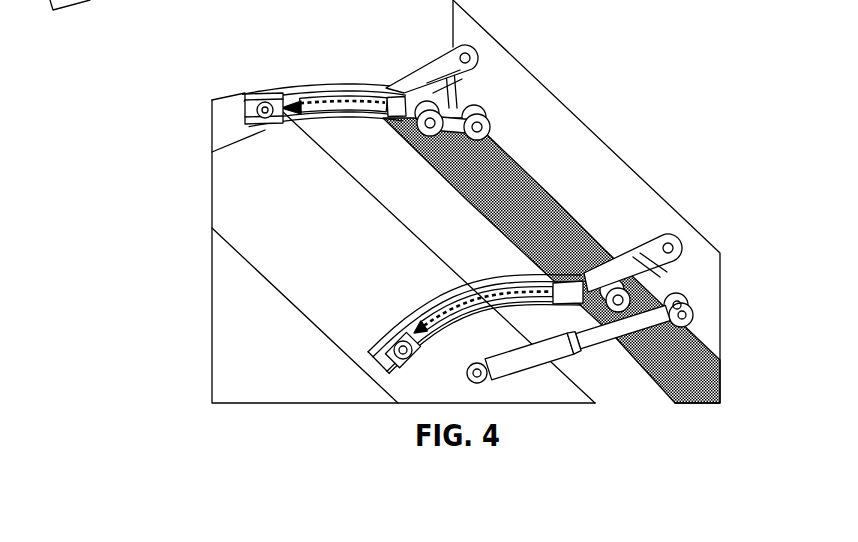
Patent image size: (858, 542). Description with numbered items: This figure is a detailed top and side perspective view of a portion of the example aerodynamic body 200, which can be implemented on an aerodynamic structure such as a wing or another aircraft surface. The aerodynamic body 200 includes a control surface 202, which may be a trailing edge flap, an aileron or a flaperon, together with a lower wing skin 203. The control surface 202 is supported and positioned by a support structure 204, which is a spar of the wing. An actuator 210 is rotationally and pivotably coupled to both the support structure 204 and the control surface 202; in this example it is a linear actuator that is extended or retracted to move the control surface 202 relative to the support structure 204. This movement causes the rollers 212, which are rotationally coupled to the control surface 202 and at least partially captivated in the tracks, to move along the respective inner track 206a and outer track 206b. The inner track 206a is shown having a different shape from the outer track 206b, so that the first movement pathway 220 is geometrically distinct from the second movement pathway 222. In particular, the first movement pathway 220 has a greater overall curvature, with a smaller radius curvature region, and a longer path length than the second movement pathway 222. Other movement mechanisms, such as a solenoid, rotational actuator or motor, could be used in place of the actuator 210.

The aerodynamic body 200 is at (431, 215).
The control surface 202 is at (268, 257).
The lower wing skin 203 is at (700, 395).
The support structure 204 is at (568, 160).
The inner track 206a is at (590, 272).
The outer track 206b is at (285, 126).
The actuator 210 is at (643, 320).
The rollers 212 is at (267, 106).
The first movement pathway 220 is at (445, 313).
The second movement pathway 222 is at (342, 100).